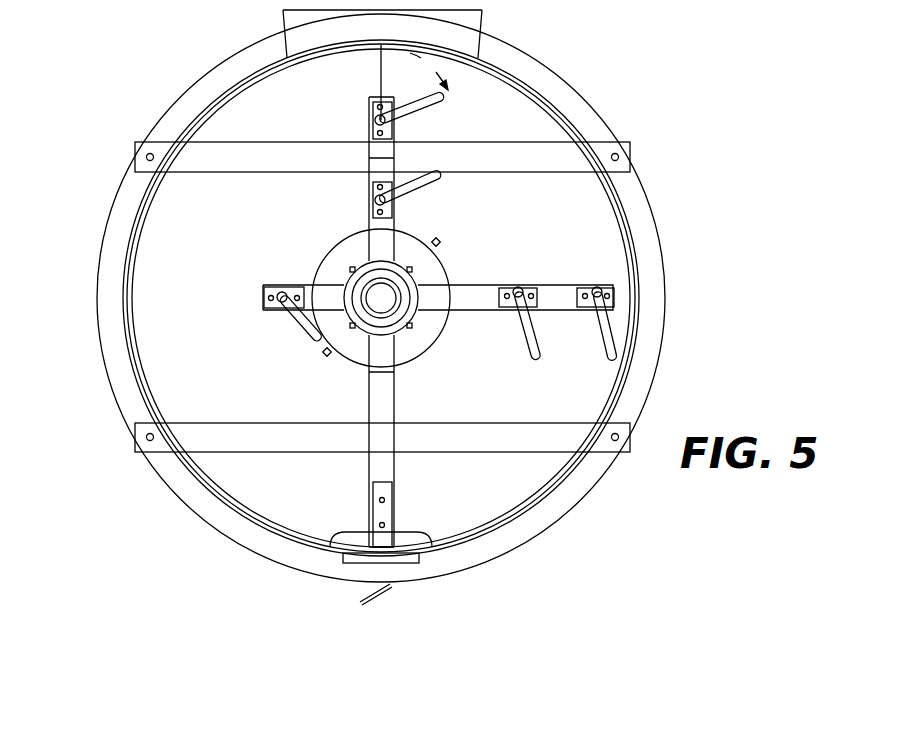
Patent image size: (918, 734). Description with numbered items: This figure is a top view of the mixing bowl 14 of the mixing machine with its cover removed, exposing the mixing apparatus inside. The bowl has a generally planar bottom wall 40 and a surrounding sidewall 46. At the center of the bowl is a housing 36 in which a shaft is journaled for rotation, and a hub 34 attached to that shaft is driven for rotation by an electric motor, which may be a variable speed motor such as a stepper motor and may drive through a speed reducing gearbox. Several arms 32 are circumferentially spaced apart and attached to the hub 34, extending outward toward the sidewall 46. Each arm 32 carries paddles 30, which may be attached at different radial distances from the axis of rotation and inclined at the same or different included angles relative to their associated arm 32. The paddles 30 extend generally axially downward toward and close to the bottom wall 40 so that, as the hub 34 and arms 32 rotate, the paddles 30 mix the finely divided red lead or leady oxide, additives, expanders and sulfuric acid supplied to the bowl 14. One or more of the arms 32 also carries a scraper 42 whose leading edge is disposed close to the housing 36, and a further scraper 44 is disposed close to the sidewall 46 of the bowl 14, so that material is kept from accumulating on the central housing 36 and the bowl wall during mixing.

The mixing bowl 14 is at (146, 129).
The sidewall 46 is at (148, 262).
The bottom wall 40 is at (190, 377).
The housing 36 is at (318, 281).
The hub 34 is at (358, 266).
The arm 32 is at (266, 292).
The paddle 30 is at (438, 174).
The scraper 42 is at (304, 327).
The scraper 44 is at (373, 532).